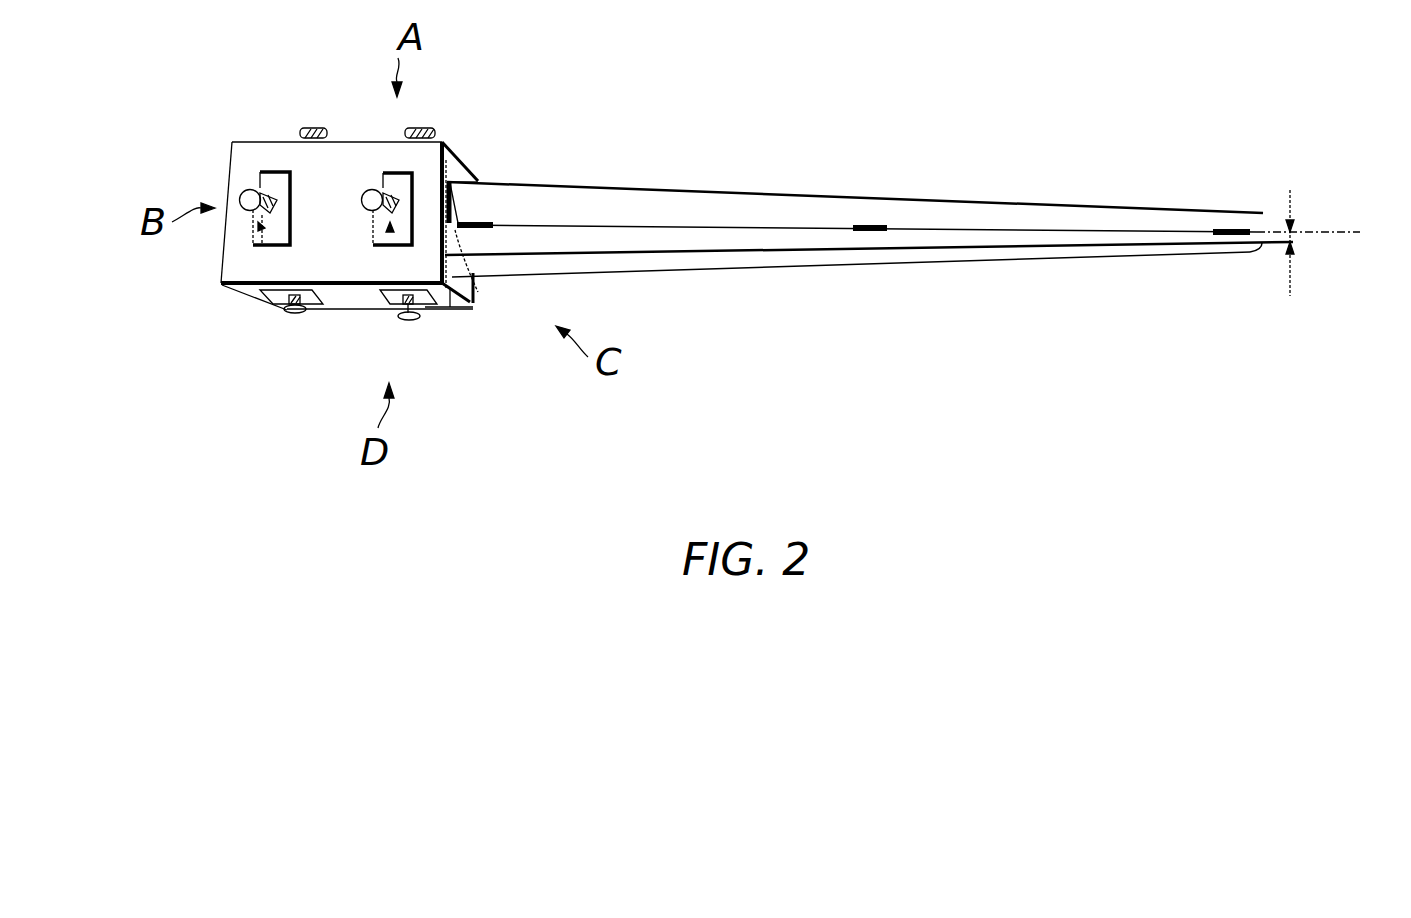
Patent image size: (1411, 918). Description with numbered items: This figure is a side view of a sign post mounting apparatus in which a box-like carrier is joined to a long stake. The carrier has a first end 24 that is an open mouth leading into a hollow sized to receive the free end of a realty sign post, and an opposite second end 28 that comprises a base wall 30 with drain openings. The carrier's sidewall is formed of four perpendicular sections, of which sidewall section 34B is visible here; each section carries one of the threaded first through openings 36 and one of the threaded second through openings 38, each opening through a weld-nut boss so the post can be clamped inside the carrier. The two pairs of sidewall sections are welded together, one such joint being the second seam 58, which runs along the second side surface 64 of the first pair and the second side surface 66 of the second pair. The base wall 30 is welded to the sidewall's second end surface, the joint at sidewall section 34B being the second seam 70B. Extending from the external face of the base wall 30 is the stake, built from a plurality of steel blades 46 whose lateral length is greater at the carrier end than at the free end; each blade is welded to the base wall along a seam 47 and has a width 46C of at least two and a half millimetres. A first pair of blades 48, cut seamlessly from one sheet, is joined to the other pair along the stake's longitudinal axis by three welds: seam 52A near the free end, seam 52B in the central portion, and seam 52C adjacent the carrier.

The first end 24 is at (201, 177).
The second end 28 is at (493, 311).
The base wall 30 is at (451, 307).
The sidewall section 34B is at (355, 152).
The first through openings 36 is at (253, 250).
The second through openings 38 is at (393, 235).
The blades 46 is at (647, 170).
The width 46C is at (1318, 238).
The seam 47 is at (472, 182).
The first pair of blades 48 is at (686, 283).
The seam 52A is at (1235, 236).
The seam 52B is at (872, 232).
The seam 52C is at (462, 230).
The second seam 58 is at (357, 285).
The second side surface 64 is at (316, 308).
The second side surface 66 is at (248, 285).
The second seam 70B is at (454, 142).